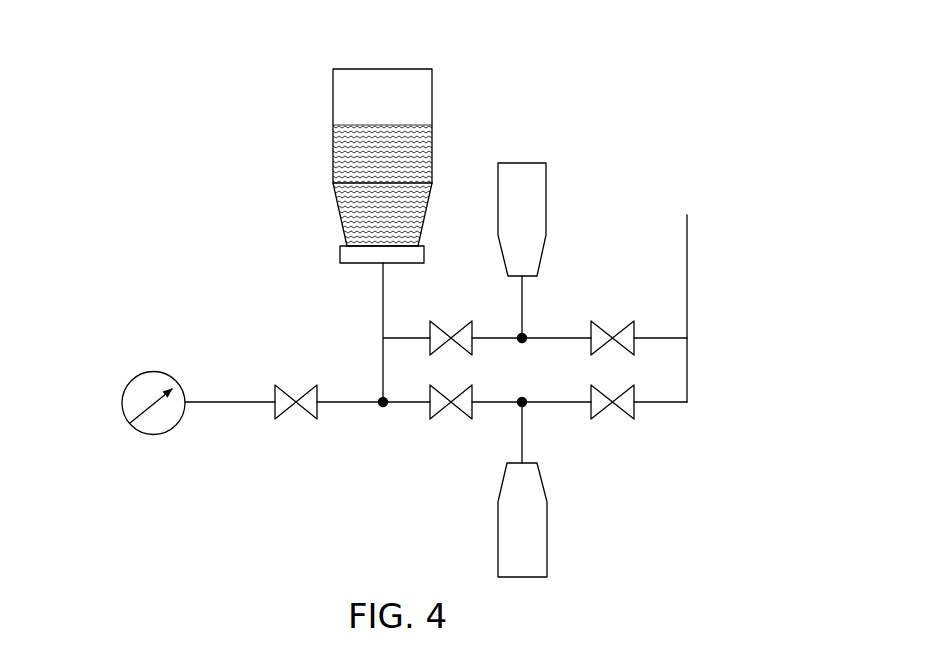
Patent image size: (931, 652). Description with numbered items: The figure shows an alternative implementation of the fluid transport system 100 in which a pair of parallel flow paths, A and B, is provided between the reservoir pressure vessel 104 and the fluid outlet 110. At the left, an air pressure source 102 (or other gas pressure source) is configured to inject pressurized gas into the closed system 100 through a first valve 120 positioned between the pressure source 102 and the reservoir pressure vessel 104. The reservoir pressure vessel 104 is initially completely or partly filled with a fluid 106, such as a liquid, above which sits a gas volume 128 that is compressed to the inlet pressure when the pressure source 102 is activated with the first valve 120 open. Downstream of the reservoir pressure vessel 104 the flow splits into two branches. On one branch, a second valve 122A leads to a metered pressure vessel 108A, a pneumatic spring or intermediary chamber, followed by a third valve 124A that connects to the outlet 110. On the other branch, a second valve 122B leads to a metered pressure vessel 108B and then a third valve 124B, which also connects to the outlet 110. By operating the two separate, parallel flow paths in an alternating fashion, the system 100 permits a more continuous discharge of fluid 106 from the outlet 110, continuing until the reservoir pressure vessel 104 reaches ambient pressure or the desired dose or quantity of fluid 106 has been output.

The fluid transport system 100 is at (300, 58).
The air pressure source 102 is at (122, 403).
The reservoir pressure vessel 104 is at (333, 97).
The fluid 106 is at (333, 152).
The gas volume 128 is at (417, 106).
The metered pressure vessel 108A is at (547, 564).
The metered pressure vessel 108B is at (546, 171).
The fluid outlet 110 is at (702, 280).
The first valve 120 is at (296, 412).
The second valve 122A is at (448, 414).
The second valve 122B is at (452, 332).
The third valve 124A is at (622, 414).
The third valve 124B is at (624, 330).